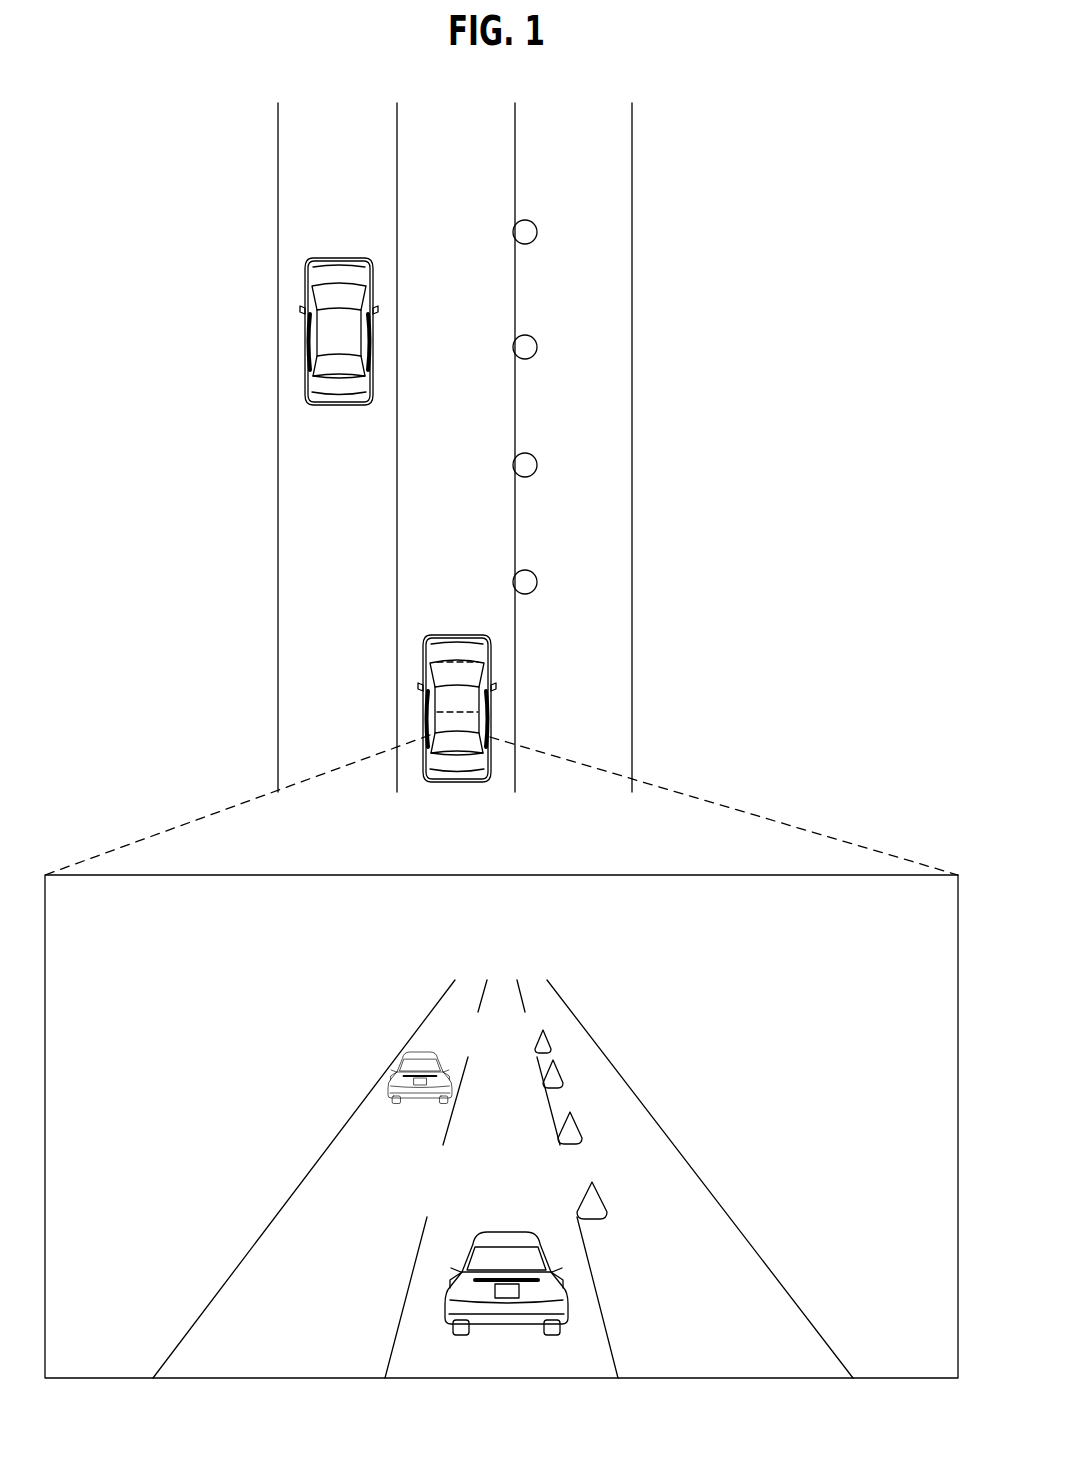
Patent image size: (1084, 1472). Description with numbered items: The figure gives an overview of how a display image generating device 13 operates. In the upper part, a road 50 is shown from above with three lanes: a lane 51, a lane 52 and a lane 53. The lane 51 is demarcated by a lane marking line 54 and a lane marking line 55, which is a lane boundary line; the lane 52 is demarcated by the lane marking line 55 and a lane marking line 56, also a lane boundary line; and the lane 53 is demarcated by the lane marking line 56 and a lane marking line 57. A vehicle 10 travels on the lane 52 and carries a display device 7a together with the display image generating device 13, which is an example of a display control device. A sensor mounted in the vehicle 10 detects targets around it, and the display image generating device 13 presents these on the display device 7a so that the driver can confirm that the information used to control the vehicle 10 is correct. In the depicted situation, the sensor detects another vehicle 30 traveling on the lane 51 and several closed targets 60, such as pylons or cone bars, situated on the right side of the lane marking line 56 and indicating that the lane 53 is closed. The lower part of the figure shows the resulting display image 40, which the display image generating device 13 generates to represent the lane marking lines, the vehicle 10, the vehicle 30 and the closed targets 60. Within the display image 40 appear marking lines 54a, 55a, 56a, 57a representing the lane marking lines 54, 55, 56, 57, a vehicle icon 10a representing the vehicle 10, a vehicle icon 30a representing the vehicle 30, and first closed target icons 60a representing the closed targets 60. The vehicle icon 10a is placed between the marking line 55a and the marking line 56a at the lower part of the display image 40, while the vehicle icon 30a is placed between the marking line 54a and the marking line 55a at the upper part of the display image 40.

The display device 7a is at (490, 719).
The vehicle 10 is at (499, 735).
The vehicle icon 10a is at (490, 1232).
The display image generating device 13 is at (490, 666).
The vehicle 30 is at (328, 270).
The vehicle icon 30a is at (433, 1055).
The display image 40 is at (245, 875).
The road 50 is at (443, 439).
The lane 51 is at (356, 164).
The lane 52 is at (478, 164).
The lane 53 is at (596, 164).
The lane marking line 54 is at (278, 120).
The lane marking line 55 is at (397, 120).
The lane marking line 56 is at (515, 120).
The lane marking line 57 is at (632, 120).
The marking line 54a is at (341, 1130).
The marking line 55a is at (396, 1333).
The marking line 56a is at (611, 1350).
The marking line 57a is at (726, 1212).
The closed target 60 is at (537, 228).
The first closed target icon 60a is at (598, 1210).